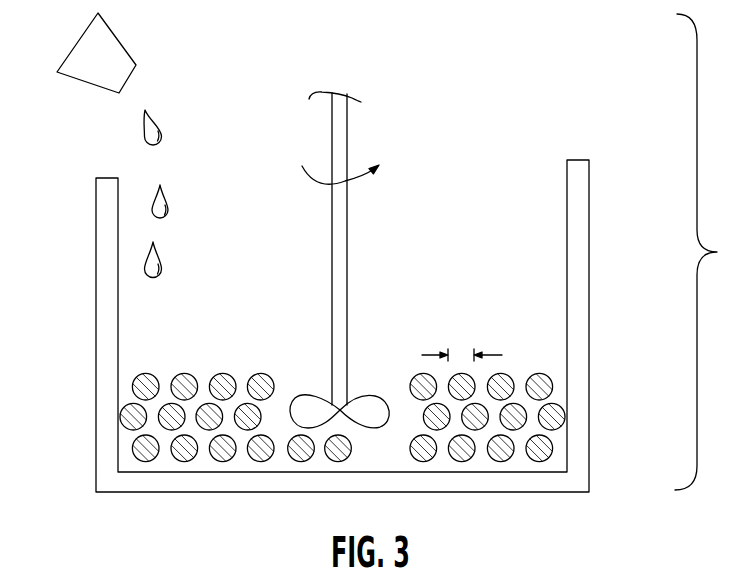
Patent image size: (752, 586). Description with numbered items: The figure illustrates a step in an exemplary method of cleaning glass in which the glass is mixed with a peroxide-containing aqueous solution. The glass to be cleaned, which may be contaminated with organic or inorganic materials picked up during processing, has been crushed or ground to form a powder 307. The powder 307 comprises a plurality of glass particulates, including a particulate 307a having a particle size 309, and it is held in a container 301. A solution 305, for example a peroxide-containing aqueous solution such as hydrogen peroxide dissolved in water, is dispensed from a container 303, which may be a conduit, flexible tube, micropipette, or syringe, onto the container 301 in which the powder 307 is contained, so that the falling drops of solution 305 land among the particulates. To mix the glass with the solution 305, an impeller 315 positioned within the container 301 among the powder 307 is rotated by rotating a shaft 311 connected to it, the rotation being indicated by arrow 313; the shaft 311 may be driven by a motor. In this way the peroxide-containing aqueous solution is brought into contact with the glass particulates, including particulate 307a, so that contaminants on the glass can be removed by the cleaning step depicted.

The container 301 is at (577, 158).
The container 303 is at (57, 69).
The solution 305 is at (168, 209).
The powder 307 is at (540, 356).
The particulate 307a is at (410, 390).
The particle size 309 is at (462, 355).
The shaft 311 is at (347, 118).
The arrow 313 is at (358, 184).
The impeller 315 is at (297, 397).